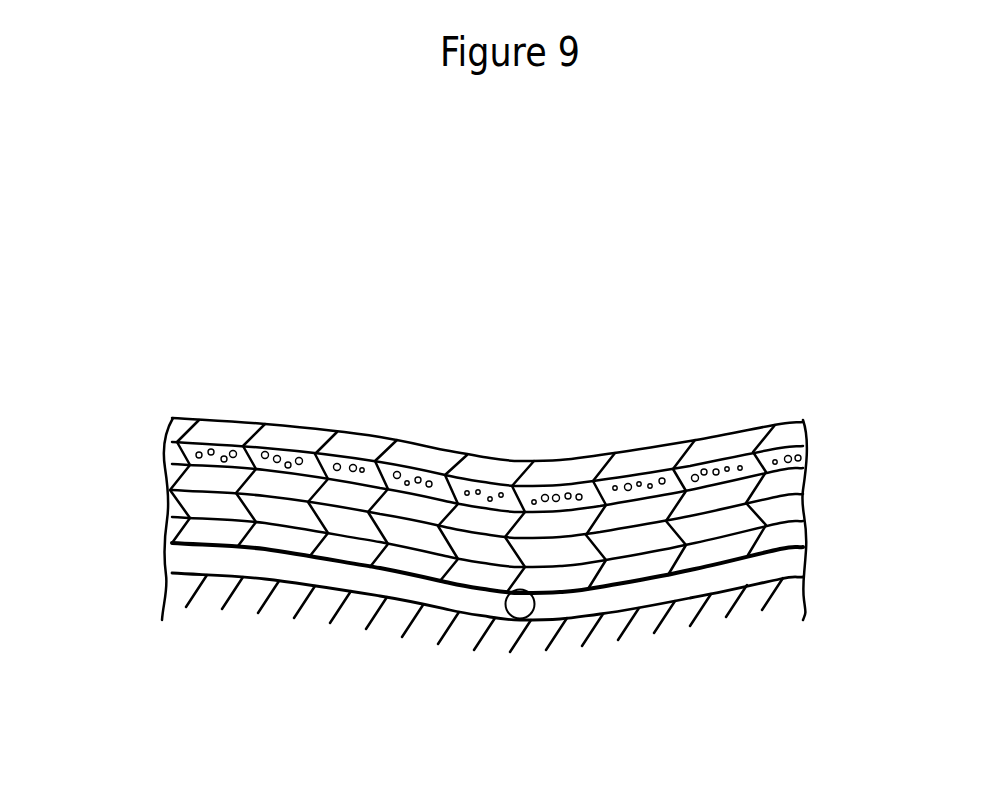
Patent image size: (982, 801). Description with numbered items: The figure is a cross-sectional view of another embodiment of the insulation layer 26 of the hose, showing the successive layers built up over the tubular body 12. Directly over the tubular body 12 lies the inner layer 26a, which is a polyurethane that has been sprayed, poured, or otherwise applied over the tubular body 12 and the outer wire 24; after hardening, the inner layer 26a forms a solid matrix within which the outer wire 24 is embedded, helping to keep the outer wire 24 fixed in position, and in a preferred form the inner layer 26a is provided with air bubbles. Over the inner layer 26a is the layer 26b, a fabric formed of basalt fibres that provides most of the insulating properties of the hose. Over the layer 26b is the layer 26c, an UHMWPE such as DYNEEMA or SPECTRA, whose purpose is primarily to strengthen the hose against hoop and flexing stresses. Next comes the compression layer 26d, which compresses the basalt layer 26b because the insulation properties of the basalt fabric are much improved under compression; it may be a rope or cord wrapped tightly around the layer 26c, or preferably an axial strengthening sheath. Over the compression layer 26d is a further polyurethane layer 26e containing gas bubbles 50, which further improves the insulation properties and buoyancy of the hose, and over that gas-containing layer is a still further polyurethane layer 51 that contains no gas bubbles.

The tubular body 12 is at (755, 593).
The outer wire 24 is at (524, 607).
The insulation layer 26 is at (823, 433).
The inner layer 26a is at (177, 558).
The layer of basalt fibre fabric 26b is at (178, 535).
The UHMWPE layer 26c is at (170, 492).
The compression layer 26d is at (165, 466).
The further polyurethane layer 26e is at (212, 445).
The gas bubbles 50 is at (417, 477).
The still further polyurethane layer 51 is at (720, 440).